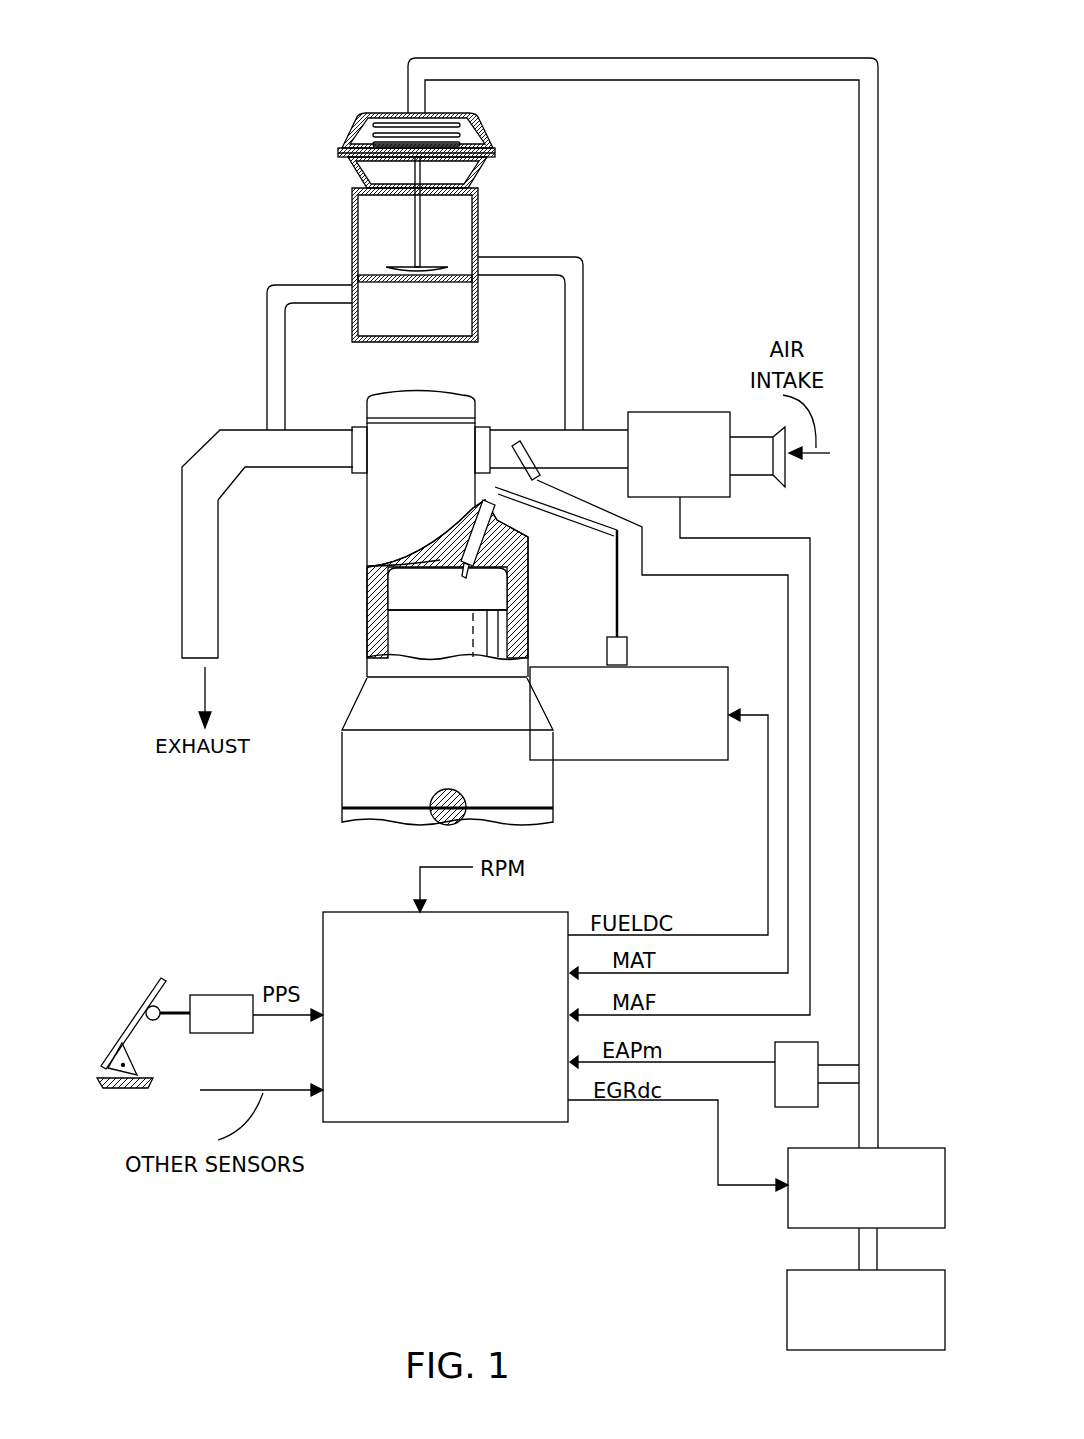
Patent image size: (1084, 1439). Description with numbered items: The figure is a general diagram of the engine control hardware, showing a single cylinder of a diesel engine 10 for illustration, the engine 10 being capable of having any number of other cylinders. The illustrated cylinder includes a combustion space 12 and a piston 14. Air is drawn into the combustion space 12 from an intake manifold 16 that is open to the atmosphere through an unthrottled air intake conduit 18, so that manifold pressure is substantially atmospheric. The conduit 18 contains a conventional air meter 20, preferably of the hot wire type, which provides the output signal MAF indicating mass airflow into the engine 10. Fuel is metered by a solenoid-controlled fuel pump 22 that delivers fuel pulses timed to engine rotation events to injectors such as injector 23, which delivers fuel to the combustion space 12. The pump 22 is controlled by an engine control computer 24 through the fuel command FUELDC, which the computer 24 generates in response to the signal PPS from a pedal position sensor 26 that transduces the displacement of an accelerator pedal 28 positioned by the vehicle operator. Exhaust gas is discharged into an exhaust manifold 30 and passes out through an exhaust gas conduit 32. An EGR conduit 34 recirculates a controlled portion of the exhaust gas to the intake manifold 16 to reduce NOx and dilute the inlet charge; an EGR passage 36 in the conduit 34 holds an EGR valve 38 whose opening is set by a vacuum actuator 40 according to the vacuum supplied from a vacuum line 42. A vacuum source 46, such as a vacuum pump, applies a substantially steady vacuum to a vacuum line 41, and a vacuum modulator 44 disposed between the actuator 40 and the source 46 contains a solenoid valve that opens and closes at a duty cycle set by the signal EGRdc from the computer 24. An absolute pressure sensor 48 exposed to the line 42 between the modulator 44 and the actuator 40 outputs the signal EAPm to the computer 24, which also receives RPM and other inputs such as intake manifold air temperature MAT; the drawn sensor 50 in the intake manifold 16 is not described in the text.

The diesel engine 10 is at (347, 507).
The combustion space 12 is at (413, 585).
The piston 14 is at (400, 638).
The intake manifold 16 is at (555, 440).
The air intake conduit 18 is at (747, 468).
The air meter 20 is at (647, 422).
The fuel pump 22 is at (708, 737).
The fuel injector 23 is at (490, 513).
The engine control computer 24 is at (400, 1123).
The pedal position sensor 26 is at (208, 995).
The accelerator pedal 28 is at (130, 1017).
The exhaust manifold 30 is at (310, 443).
The exhaust gas conduit 32 is at (192, 637).
The EGR conduit 34 is at (318, 290).
The EGR passage 36 is at (452, 214).
The EGR valve 38 is at (417, 241).
The vacuum actuator 40 is at (360, 138).
The vacuum line 41 is at (868, 1250).
The vacuum line 42 is at (507, 70).
The vacuum modulator 44 is at (927, 1160).
The vacuum source 46 is at (798, 1305).
The absolute pressure sensor 48 is at (808, 1060).
The manifold air temperature sensor 50 is at (535, 443).